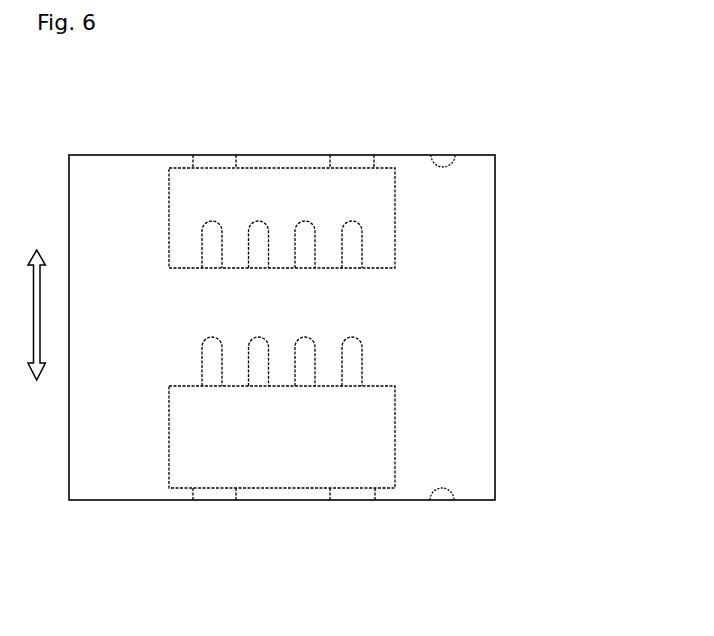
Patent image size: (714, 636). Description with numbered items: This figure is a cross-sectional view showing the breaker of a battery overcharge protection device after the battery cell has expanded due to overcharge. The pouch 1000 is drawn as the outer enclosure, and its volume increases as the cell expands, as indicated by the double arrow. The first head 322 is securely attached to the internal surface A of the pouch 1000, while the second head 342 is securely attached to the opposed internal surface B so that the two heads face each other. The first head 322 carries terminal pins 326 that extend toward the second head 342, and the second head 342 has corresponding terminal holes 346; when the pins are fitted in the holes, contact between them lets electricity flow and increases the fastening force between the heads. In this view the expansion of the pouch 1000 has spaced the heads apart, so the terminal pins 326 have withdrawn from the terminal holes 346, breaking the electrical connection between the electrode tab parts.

The pouch 1000 is at (495, 185).
The second head 342 is at (278, 182).
The terminal holes 346 is at (362, 241).
The first head 322 is at (278, 474).
The terminal pins 326 is at (352, 355).
The internal surface A is at (453, 500).
The internal surface B is at (455, 155).